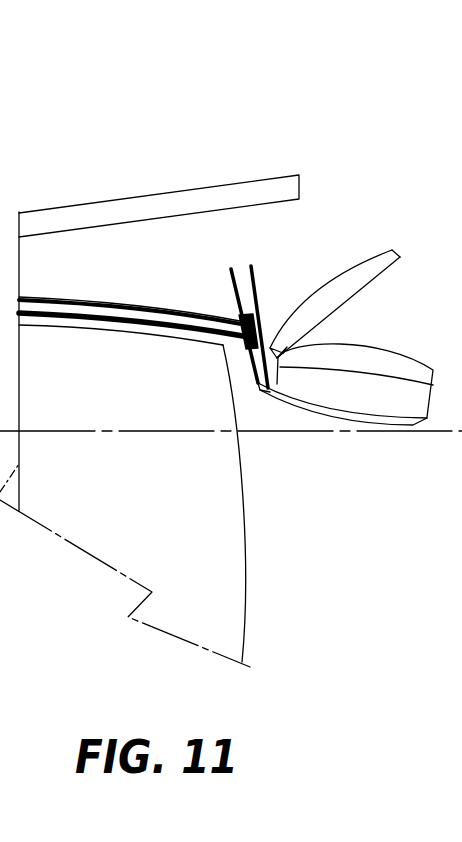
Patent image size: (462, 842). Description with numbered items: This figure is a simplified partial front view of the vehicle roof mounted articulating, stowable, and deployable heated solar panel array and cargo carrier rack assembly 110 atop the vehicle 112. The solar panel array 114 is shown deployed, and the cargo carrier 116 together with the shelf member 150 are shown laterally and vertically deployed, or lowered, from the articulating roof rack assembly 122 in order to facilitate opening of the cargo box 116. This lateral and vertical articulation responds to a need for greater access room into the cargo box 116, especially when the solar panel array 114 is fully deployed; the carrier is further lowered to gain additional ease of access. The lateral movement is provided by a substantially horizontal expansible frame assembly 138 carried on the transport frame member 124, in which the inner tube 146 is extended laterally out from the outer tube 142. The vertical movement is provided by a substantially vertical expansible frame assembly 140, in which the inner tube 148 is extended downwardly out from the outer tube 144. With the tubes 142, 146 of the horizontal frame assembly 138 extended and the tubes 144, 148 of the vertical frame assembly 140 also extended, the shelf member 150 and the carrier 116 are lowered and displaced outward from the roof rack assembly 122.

The heated solar panel array and cargo carrier rack assembly 110 is at (213, 151).
The vehicle 112 is at (278, 598).
The solar panel array 114 is at (80, 204).
The cargo carrier 116 is at (372, 399).
The articulating roof rack assembly 122 is at (267, 403).
The transport frame member 124 is at (116, 342).
The horizontal expansible frame assembly 138 is at (51, 320).
The vertical expansible frame assembly 140 is at (266, 289).
The outer tube 142 is at (58, 299).
The outer tube 144 is at (255, 272).
The inner tube 146 is at (148, 308).
The inner tube 148 is at (255, 360).
The shelf member 150 is at (373, 421).